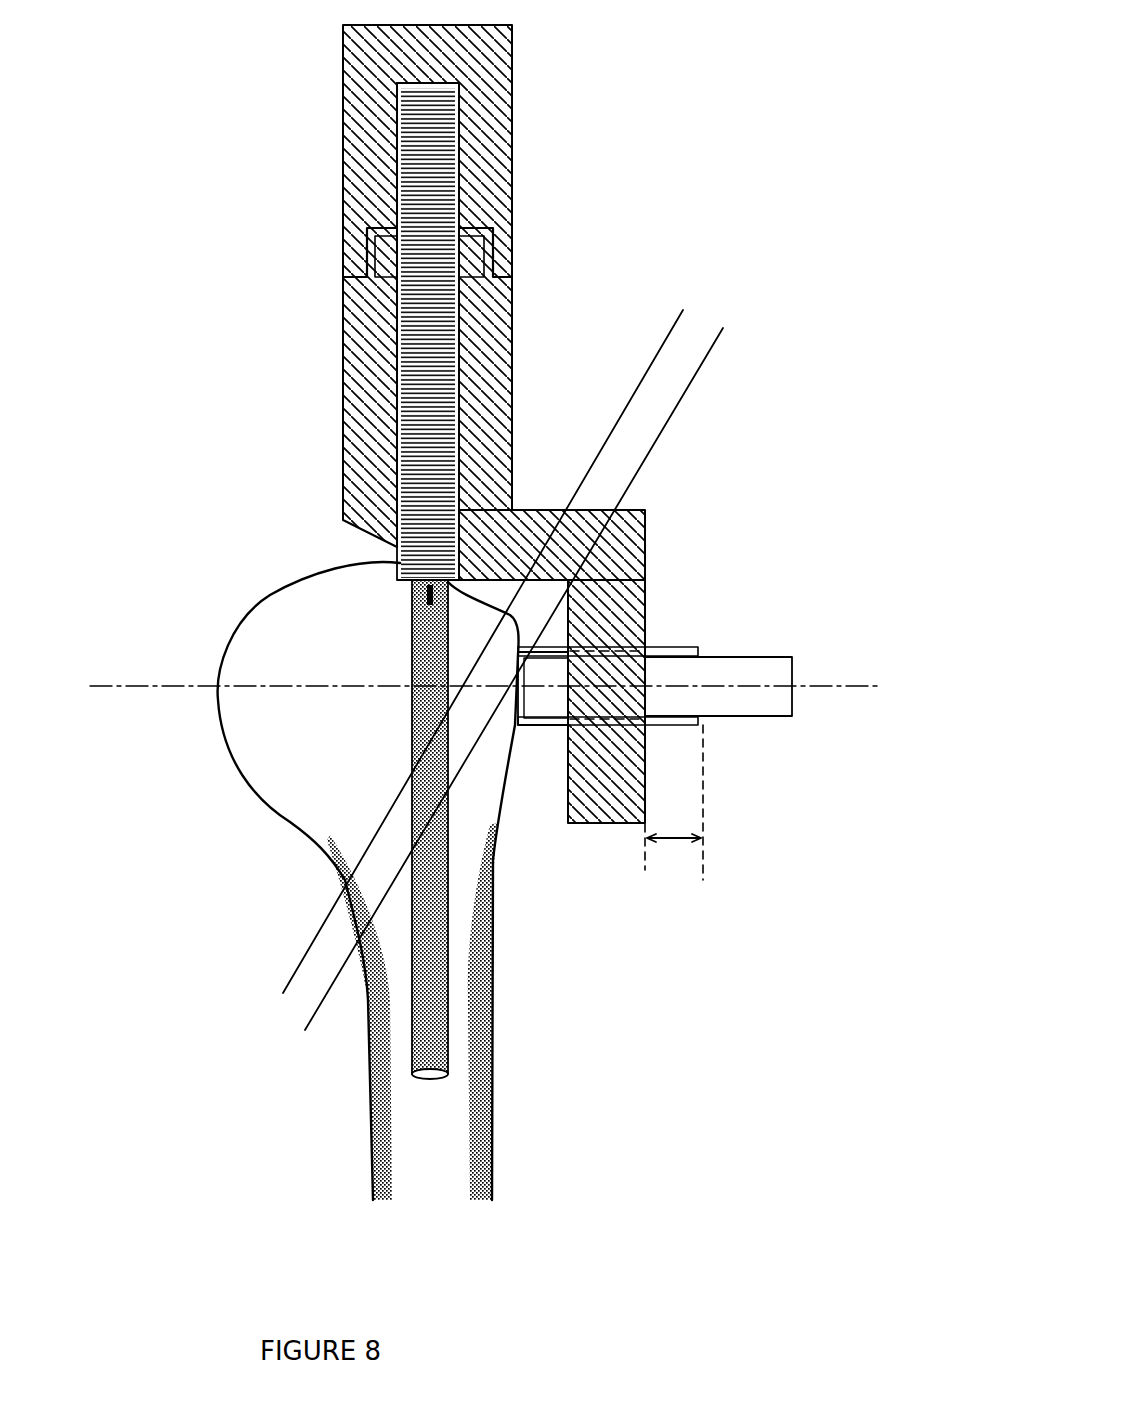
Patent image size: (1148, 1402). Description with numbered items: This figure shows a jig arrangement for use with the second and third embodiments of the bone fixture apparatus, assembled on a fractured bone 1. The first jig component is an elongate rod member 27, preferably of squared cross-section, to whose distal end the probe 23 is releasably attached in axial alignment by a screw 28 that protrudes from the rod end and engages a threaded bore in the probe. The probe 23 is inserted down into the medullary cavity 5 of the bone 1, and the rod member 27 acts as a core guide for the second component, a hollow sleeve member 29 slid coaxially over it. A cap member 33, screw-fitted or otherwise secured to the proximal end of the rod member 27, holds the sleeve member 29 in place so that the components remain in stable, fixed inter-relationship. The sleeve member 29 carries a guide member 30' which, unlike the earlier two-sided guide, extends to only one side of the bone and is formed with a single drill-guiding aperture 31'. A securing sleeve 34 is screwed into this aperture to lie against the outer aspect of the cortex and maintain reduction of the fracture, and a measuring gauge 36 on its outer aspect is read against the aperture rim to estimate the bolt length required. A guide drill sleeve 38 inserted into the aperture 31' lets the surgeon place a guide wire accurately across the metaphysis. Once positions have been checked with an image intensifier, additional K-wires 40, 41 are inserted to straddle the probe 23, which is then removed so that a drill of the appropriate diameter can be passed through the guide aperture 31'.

The bone 1 is at (470, 1128).
The medullary cavity 5 is at (398, 992).
The probe 23 is at (435, 1020).
The rod member 27 is at (437, 370).
The screw 28 is at (412, 594).
The sleeve member 29 is at (360, 398).
The guide member 30' is at (619, 666).
The drill-guiding aperture 31' is at (668, 700).
The cap member 33 is at (496, 143).
The securing sleeve 34 is at (700, 648).
The measuring gauge 36 is at (672, 845).
The guide drill sleeve 38 is at (773, 710).
The K-wire 40 is at (716, 350).
The K-wire 41 is at (648, 375).